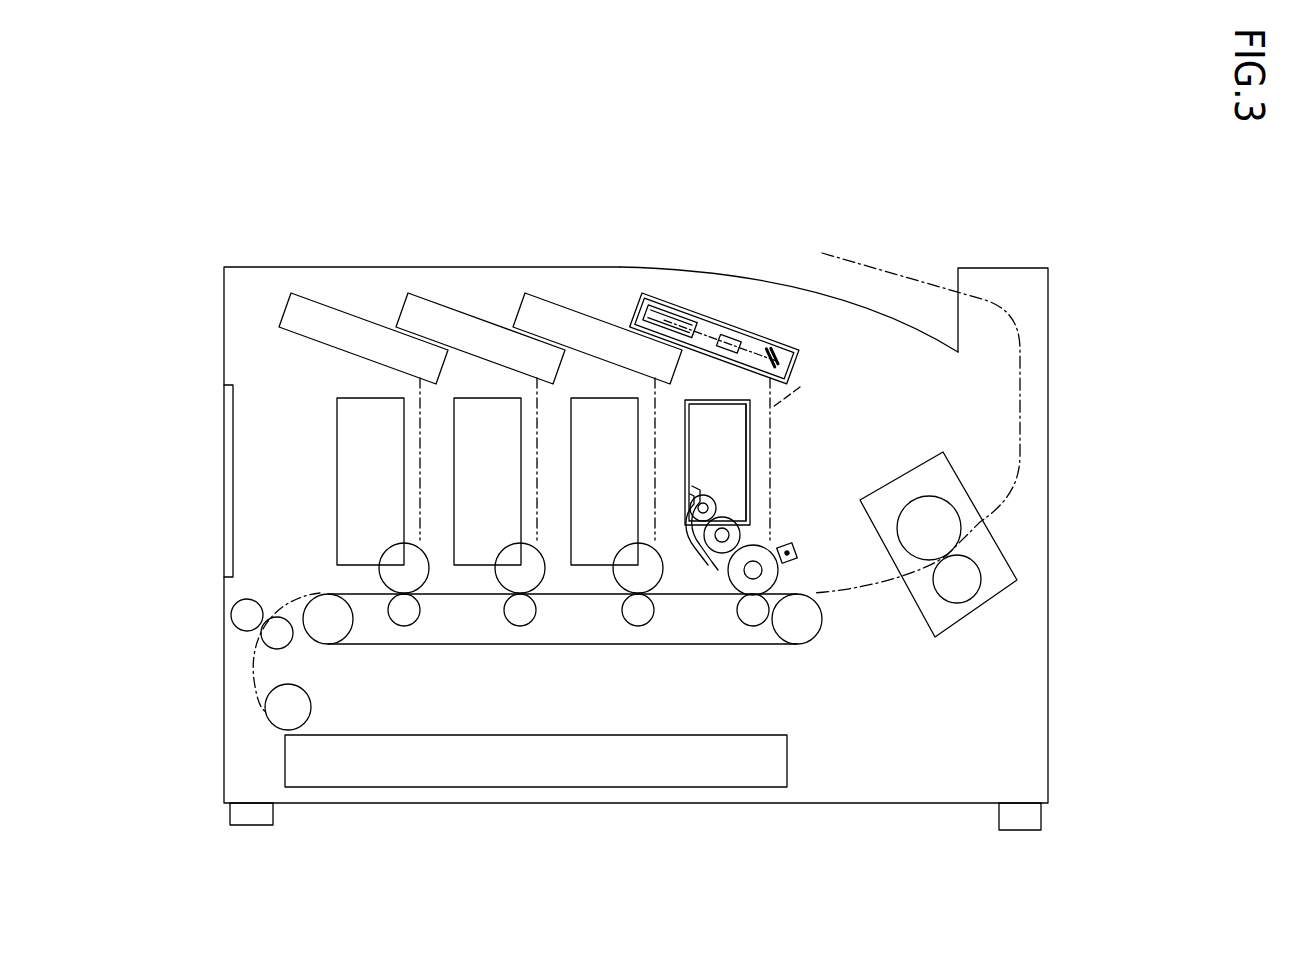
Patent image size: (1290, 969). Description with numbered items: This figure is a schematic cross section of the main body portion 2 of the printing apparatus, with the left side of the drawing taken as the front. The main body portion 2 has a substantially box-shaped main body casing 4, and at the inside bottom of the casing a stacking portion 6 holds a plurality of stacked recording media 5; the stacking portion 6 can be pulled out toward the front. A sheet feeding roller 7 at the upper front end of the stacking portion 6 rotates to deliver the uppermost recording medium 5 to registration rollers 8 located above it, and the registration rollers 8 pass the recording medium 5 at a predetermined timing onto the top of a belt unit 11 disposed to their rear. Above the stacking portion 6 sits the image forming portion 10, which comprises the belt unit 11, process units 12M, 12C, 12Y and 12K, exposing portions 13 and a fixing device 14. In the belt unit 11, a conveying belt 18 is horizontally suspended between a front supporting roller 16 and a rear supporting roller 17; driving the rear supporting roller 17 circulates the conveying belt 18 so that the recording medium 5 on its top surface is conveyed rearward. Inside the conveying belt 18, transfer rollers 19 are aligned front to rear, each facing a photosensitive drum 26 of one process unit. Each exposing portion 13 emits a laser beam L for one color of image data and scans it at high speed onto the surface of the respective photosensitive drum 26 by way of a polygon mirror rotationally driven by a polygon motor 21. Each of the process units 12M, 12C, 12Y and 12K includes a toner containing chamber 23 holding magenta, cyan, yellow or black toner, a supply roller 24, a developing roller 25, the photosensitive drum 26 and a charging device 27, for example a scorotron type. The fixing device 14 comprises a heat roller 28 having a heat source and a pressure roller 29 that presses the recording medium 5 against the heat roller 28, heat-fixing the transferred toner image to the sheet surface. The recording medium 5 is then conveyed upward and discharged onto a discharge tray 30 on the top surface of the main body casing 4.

The main body portion 2 is at (485, 168).
The main body casing 4 is at (1048, 357).
The recording medium 5 is at (888, 270).
The stacking portion 6 is at (540, 778).
The sheet feeding roller 7 is at (298, 705).
The registration rollers 8 is at (262, 648).
The image forming portion 10 is at (825, 675).
The belt unit 11 is at (553, 662).
The process unit 12M is at (378, 397).
The process unit 12C is at (495, 397).
The process unit 12Y is at (612, 397).
The process unit 12K is at (733, 397).
The exposing portion 13 is at (455, 310).
The fixing device 14 is at (908, 478).
The supporting roller 16 is at (327, 628).
The supporting roller 17 is at (803, 622).
The conveying belt 18 is at (602, 645).
The transfer roller 19 is at (404, 612).
The polygon motor 21 is at (682, 308).
The toner containing chamber 23 is at (750, 442).
The supply roller 24 is at (708, 495).
The developing roller 25 is at (727, 518).
The photosensitive drum 26 is at (420, 575).
The charging device 27 is at (795, 552).
The heat roller 28 is at (940, 502).
The pressure roller 29 is at (965, 577).
The discharge tray 30 is at (763, 282).
The laser beam L is at (800, 387).